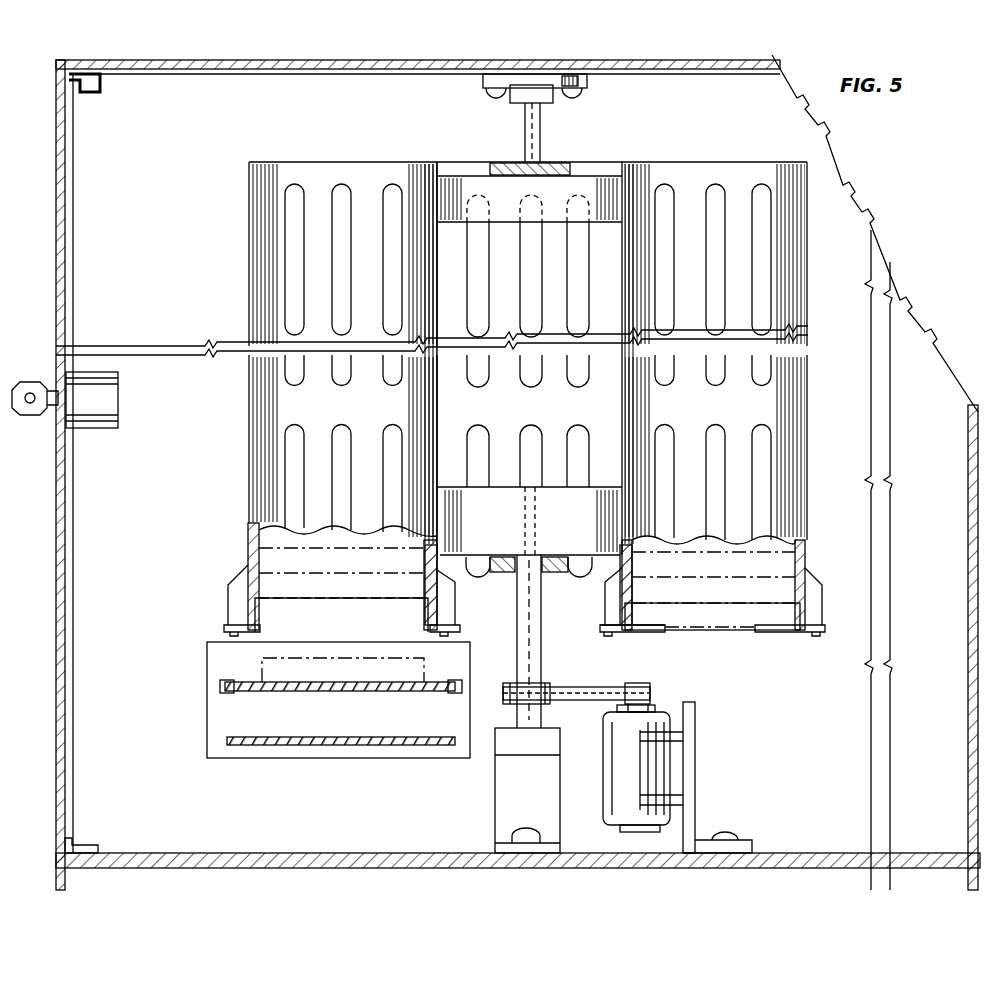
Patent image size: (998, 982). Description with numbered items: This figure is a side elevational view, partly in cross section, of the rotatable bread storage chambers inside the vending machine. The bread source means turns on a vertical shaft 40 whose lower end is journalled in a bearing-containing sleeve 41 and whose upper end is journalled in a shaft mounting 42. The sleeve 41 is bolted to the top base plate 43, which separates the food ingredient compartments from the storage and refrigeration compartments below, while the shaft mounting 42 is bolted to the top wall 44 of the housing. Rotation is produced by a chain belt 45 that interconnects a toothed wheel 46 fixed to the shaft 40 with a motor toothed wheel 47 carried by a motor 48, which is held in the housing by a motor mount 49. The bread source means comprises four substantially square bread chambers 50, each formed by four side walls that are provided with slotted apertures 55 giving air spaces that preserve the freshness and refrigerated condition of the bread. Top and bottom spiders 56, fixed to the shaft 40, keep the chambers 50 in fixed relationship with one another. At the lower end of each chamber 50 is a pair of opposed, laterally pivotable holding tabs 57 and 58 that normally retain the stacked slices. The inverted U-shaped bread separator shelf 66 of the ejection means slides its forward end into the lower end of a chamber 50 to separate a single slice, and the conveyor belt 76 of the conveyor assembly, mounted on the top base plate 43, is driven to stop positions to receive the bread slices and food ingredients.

The shaft 40 is at (541, 645).
The bearing-containing sleeve 41 is at (512, 790).
The shaft mounting 42 is at (560, 96).
The top base plate 43 is at (335, 862).
The top wall 44 is at (392, 62).
The chain belt 45 is at (592, 688).
The toothed wheel 46 is at (541, 710).
The motor toothed wheel 47 is at (648, 684).
The motor 48 is at (630, 772).
The motor mount 49 is at (690, 768).
The bread chamber 50 is at (455, 162).
The slotted apertures 55 is at (340, 212).
The spiders 56 is at (514, 160).
The holding tab 57 is at (226, 628).
The holding tab 58 is at (662, 632).
The bread separator shelf 66 is at (368, 598).
The conveyor belt 76 is at (325, 748).